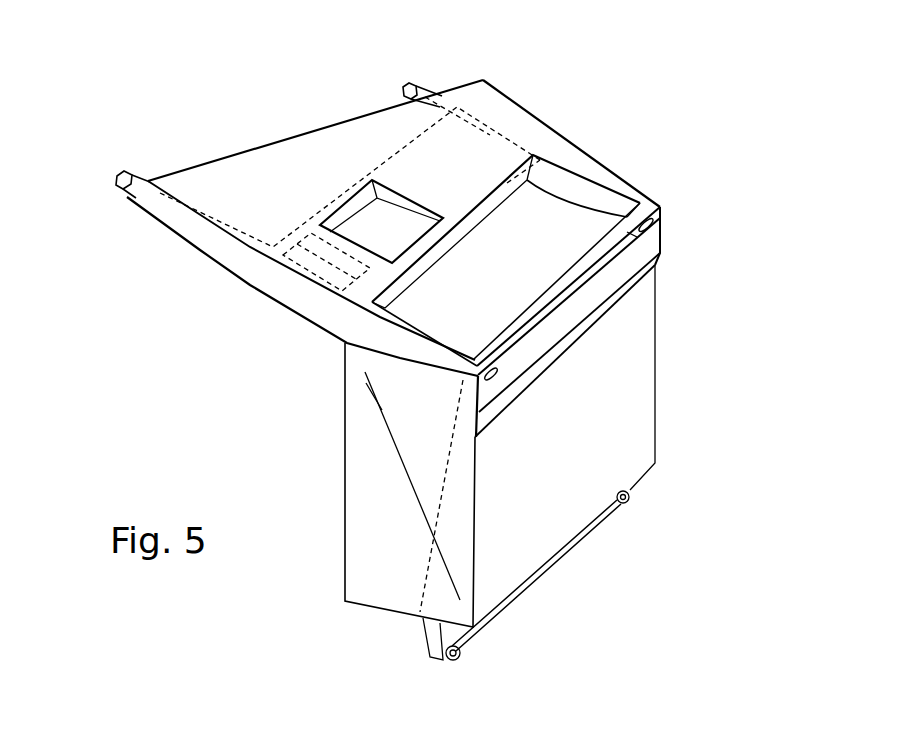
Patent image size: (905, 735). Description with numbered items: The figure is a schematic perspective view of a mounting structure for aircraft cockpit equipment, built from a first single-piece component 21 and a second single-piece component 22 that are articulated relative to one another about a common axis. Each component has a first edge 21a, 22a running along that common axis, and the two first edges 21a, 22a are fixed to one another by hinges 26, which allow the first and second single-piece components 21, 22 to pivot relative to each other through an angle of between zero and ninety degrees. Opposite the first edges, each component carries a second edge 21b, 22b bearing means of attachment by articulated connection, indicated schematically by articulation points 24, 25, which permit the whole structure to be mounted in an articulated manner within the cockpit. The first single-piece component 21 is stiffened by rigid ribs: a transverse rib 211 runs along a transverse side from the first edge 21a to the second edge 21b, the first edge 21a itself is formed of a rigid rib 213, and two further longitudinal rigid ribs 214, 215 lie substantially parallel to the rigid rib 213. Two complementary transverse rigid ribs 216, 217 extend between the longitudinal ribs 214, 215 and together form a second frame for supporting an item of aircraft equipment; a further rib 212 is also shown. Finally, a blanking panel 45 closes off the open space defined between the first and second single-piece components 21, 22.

The first single-piece component 21 is at (252, 170).
The first edge 21a is at (643, 205).
The second edge 21b is at (192, 182).
The transverse rib 211 is at (313, 308).
The rigid rib 212 is at (577, 187).
The rigid rib 213 is at (656, 232).
The longitudinal rigid rib 214 is at (455, 247).
The longitudinal rigid rib 215 is at (352, 203).
The complementary transverse rigid rib 216 is at (410, 207).
The complementary transverse rigid rib 217 is at (317, 277).
The second single-piece component 22 is at (635, 353).
The first edge 22a is at (560, 317).
The second edge 22b is at (455, 636).
The articulation point 24 is at (421, 80).
The articulation point 25 is at (640, 497).
The hinge 26 is at (652, 216).
The blanking panel 45 is at (367, 525).